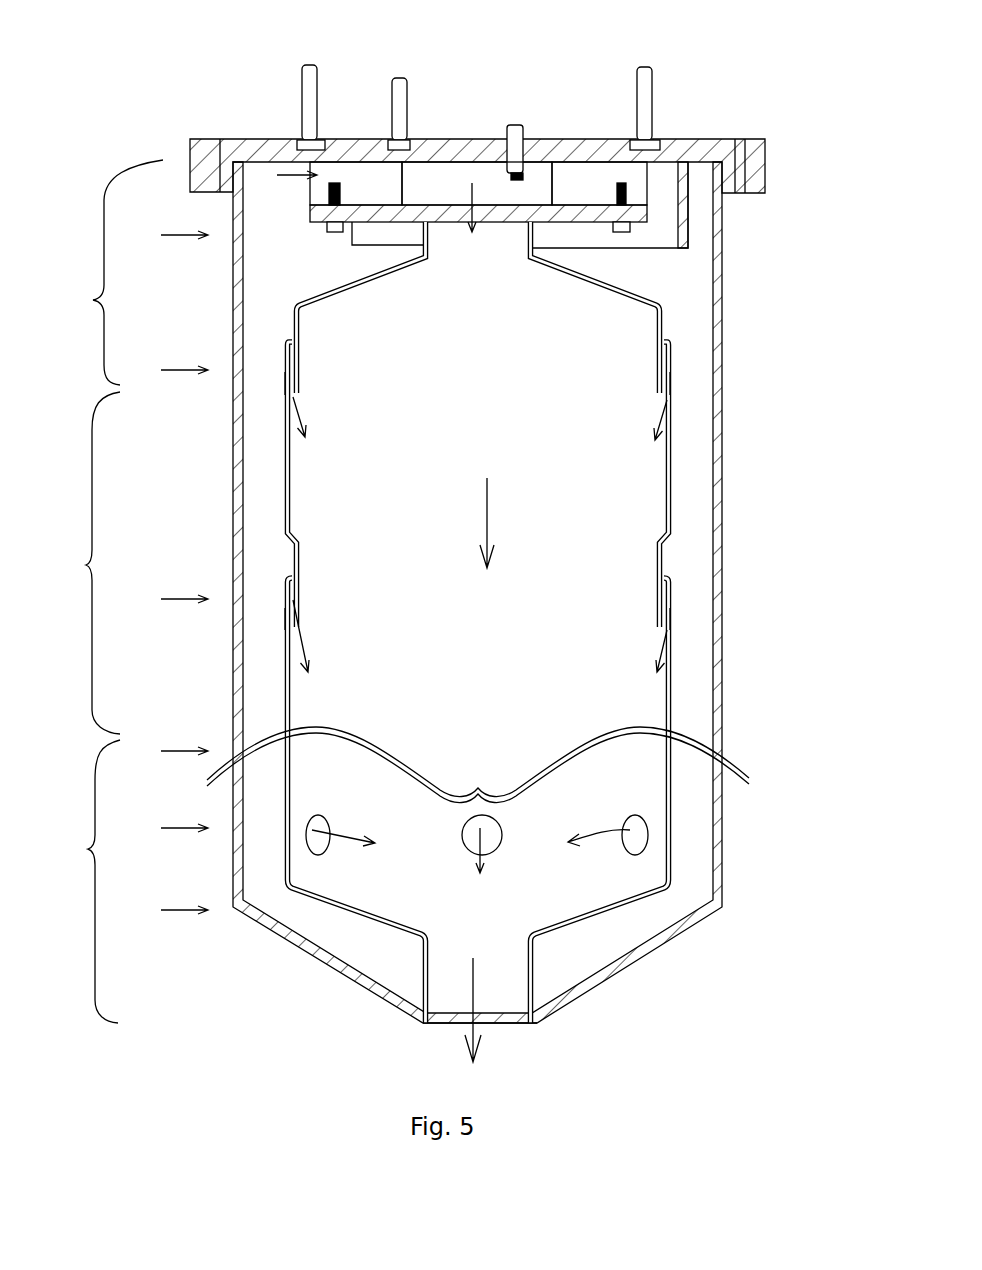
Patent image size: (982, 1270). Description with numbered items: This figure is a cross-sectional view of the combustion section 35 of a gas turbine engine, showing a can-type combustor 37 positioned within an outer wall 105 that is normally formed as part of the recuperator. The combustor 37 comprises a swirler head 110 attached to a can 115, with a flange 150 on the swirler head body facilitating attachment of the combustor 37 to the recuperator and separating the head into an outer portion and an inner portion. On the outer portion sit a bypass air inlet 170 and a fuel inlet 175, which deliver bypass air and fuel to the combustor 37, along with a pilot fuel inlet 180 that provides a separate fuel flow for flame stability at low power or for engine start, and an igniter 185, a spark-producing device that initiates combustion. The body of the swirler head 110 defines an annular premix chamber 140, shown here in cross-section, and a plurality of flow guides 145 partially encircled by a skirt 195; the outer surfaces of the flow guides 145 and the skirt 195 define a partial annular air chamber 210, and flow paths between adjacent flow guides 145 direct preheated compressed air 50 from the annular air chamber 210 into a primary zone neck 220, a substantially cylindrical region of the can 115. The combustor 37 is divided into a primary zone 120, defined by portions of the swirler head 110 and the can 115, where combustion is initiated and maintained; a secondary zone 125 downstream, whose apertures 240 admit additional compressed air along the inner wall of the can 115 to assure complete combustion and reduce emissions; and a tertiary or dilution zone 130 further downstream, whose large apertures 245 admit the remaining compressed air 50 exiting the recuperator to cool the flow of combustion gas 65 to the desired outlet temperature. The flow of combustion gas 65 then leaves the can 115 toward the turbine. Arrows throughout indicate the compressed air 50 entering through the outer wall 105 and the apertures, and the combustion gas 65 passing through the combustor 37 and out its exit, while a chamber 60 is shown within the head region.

The combustion section 35 is at (756, 53).
The combustor 37 is at (504, 622).
The preheated compressed air 50 is at (183, 237).
The inlet chamber 60 is at (471, 198).
The flow of combustion gas 65 is at (473, 1023).
The outer wall 105 is at (722, 498).
The swirler head 110 is at (242, 138).
The can 115 is at (672, 430).
The primary zone 120 is at (103, 272).
The secondary zone 125 is at (81, 563).
The tertiary or dilution zone 130 is at (82, 881).
The premix chamber 140 is at (318, 140).
The flow guides 145 is at (385, 188).
The flange 150 is at (765, 142).
The bypass air inlet 170 is at (308, 93).
The fuel inlet 175 is at (648, 102).
The pilot fuel inlet 180 is at (410, 103).
The igniter 185 is at (522, 130).
The skirt 195 is at (643, 233).
The annular air chamber 210 is at (672, 228).
The primary zone neck 220 is at (523, 257).
The apertures 240 is at (294, 378).
The large apertures 245 is at (630, 850).